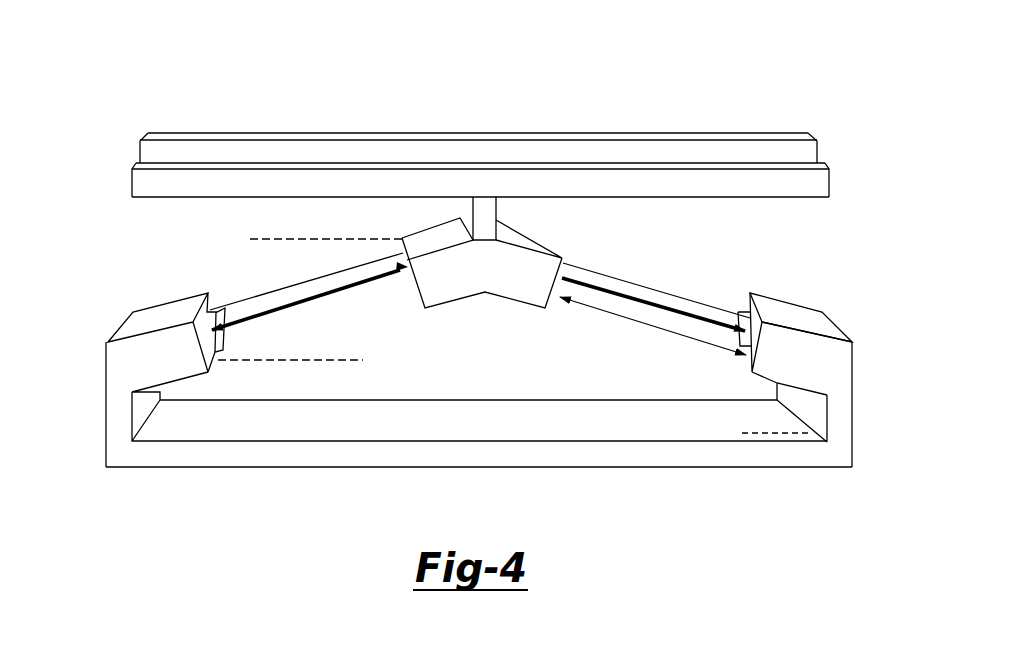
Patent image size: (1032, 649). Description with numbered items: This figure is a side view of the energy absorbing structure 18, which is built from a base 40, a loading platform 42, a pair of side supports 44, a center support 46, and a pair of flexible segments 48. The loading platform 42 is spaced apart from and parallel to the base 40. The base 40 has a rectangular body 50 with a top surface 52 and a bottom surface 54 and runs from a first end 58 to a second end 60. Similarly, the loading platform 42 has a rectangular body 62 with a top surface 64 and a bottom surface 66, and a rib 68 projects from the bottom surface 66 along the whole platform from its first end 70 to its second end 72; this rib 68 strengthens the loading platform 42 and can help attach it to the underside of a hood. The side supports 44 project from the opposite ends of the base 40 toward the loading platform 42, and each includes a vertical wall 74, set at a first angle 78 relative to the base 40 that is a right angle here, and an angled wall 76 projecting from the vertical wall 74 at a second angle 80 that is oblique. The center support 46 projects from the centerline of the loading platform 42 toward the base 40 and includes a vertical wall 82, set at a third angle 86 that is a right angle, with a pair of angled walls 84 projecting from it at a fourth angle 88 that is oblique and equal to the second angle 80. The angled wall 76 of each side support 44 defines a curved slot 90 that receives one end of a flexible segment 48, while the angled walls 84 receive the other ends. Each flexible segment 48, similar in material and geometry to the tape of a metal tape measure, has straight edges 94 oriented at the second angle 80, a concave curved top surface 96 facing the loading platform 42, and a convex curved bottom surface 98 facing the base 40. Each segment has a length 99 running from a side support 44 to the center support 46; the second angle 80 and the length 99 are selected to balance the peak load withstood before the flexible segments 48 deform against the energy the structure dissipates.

The energy absorbing structure 18 is at (226, 80).
The base 40 is at (285, 488).
The loading platform 42 is at (321, 128).
The side supports 44 is at (119, 321).
The center support 46 is at (480, 299).
The flexible segments 48 is at (631, 266).
The rectangular body 50 is at (704, 458).
The top surface 52 is at (487, 417).
The bottom surface 54 is at (543, 481).
The first end 58 is at (106, 450).
The second end 60 is at (852, 445).
The rectangular body 62 is at (657, 180).
The top surface 64 is at (170, 163).
The bottom surface 66 is at (176, 200).
The rib 68 is at (550, 155).
The first end 70 is at (132, 177).
The second end 72 is at (835, 178).
The vertical wall 74 is at (117, 415).
The angled wall 76 is at (793, 311).
The first angle 78 is at (809, 406).
The second angle 80 is at (325, 302).
The vertical wall 82 is at (462, 214).
The angled walls 84 is at (413, 242).
The third angle 86 is at (499, 219).
The fourth angle 88 is at (288, 241).
The curved slot 90 is at (740, 300).
The straight edges 94 is at (697, 292).
The curved top surface 96 is at (647, 292).
The curved bottom surface 98 is at (610, 297).
The length 99 is at (653, 326).